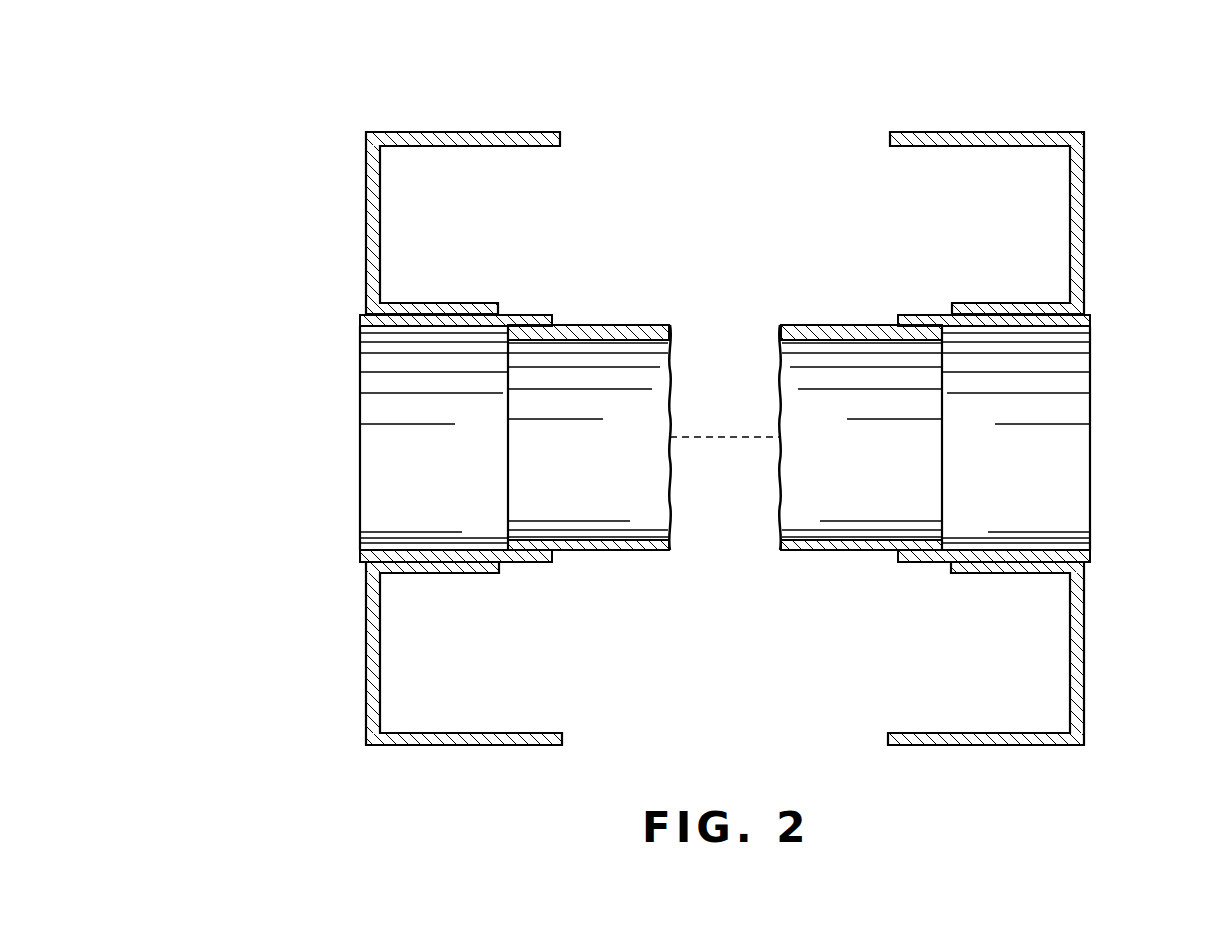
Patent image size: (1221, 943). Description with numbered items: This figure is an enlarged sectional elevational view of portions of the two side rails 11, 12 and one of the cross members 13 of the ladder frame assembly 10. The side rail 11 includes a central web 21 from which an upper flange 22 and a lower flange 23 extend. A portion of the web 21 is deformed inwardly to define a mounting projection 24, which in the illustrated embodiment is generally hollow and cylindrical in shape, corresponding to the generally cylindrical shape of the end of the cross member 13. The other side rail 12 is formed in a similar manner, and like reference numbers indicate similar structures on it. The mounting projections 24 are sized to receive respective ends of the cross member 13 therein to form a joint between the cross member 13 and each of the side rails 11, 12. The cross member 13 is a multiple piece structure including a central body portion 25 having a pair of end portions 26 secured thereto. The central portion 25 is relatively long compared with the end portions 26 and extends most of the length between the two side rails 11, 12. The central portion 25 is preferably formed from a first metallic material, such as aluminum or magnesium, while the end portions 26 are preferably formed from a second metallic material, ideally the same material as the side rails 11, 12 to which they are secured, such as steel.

The ladder frame assembly 10 is at (293, 590).
The side rail 11 is at (328, 147).
The side rail 12 is at (1103, 122).
The cross member 13 is at (645, 296).
The central web 21 is at (367, 205).
The upper flange 22 is at (472, 133).
The lower flange 23 is at (471, 740).
The mounting projection 24 is at (463, 303).
The central body portion 25 is at (633, 552).
The end portions 26 is at (517, 555).